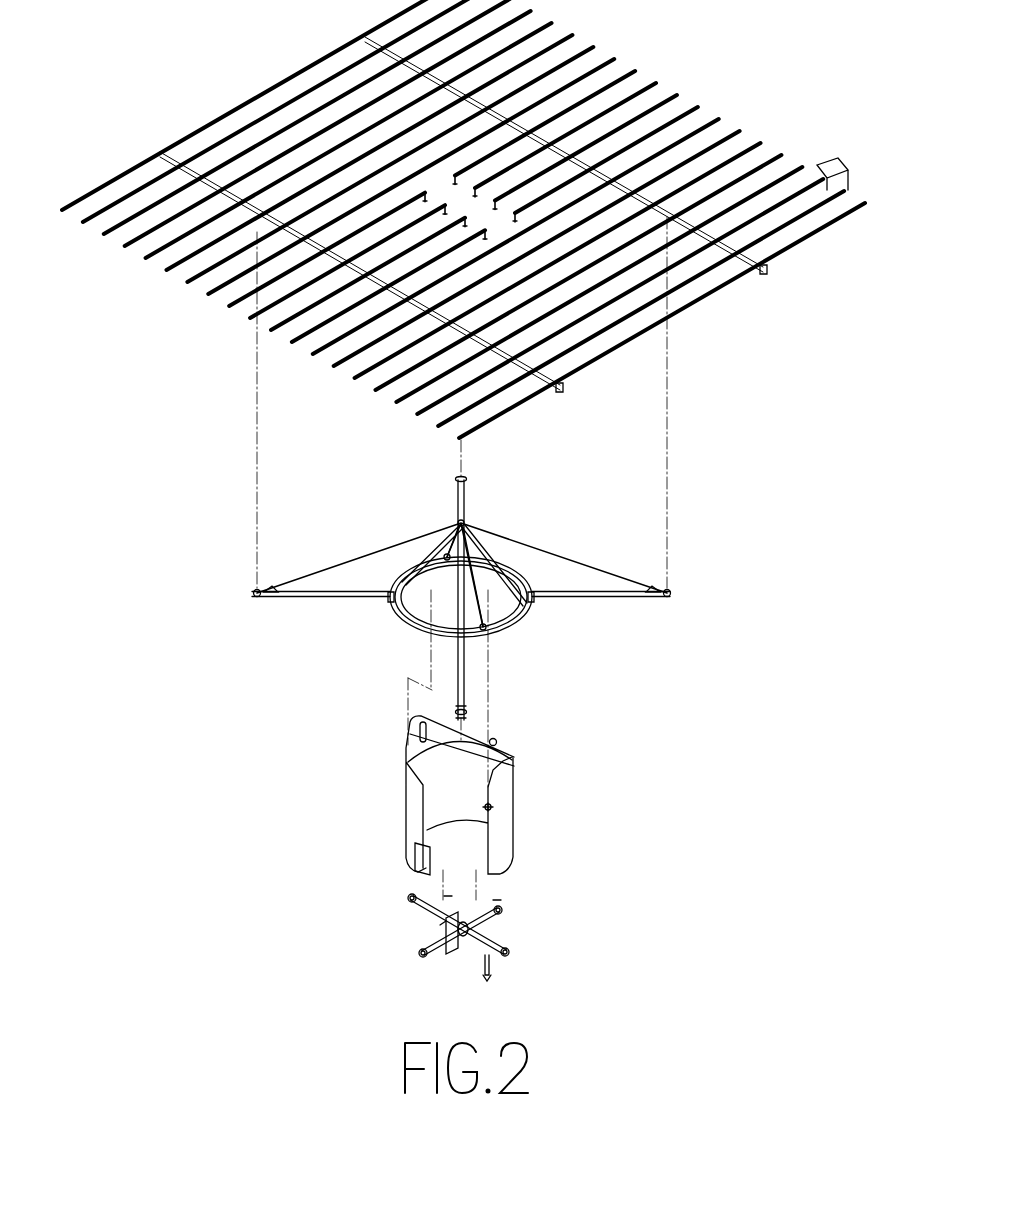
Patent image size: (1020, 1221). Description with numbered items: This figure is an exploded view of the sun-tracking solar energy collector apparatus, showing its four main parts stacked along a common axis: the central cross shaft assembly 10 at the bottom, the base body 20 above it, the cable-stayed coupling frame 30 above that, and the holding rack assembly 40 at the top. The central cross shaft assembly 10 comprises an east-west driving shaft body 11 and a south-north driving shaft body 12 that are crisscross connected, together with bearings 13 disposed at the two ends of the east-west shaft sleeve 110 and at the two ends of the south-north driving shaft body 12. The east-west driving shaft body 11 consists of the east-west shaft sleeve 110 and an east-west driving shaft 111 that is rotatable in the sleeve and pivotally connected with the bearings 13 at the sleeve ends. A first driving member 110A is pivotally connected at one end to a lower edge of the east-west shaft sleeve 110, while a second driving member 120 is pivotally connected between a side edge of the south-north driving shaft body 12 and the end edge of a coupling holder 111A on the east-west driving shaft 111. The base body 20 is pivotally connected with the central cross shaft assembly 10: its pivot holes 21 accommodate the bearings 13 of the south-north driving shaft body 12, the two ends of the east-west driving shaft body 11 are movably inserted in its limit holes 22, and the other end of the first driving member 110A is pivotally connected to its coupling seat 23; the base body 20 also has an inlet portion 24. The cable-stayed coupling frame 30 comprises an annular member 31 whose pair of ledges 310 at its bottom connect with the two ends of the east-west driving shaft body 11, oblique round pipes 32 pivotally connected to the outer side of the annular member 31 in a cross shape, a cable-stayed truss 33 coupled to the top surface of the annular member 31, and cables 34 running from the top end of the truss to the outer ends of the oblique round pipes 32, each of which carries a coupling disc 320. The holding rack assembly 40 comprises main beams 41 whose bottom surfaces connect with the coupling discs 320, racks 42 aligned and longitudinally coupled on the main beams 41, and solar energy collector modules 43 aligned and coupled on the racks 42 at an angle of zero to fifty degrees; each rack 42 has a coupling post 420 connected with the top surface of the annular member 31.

The central cross shaft assembly 10 is at (469, 924).
The east-west driving shaft body 11 is at (449, 893).
The south-north driving shaft body 12 is at (498, 898).
The bearings 13 is at (430, 950).
The east-west shaft sleeve 110 is at (506, 925).
The first driving member 110A is at (492, 975).
The east-west driving shaft 111 is at (502, 940).
The coupling holder 111A is at (445, 930).
The second driving member 120 is at (458, 955).
The base body 20 is at (487, 795).
The pivot holes 21 is at (418, 775).
The limit holes 22 is at (517, 770).
The coupling seat 23 is at (496, 805).
The inlet portion 24 is at (405, 848).
The cable-stayed coupling frame 30 is at (414, 583).
The annular member 31 is at (398, 612).
The oblique round pipes 32 is at (295, 597).
The cable-stayed truss 33 is at (445, 545).
The cables 34 is at (330, 565).
The ledges 310 is at (408, 560).
The coupling disc 320 is at (255, 590).
The holding rack assembly 40 is at (471, 219).
The main beams 41 is at (772, 268).
The racks 42 is at (750, 132).
The solar energy collector modules 43 is at (838, 157).
The coupling post 420 is at (555, 218).